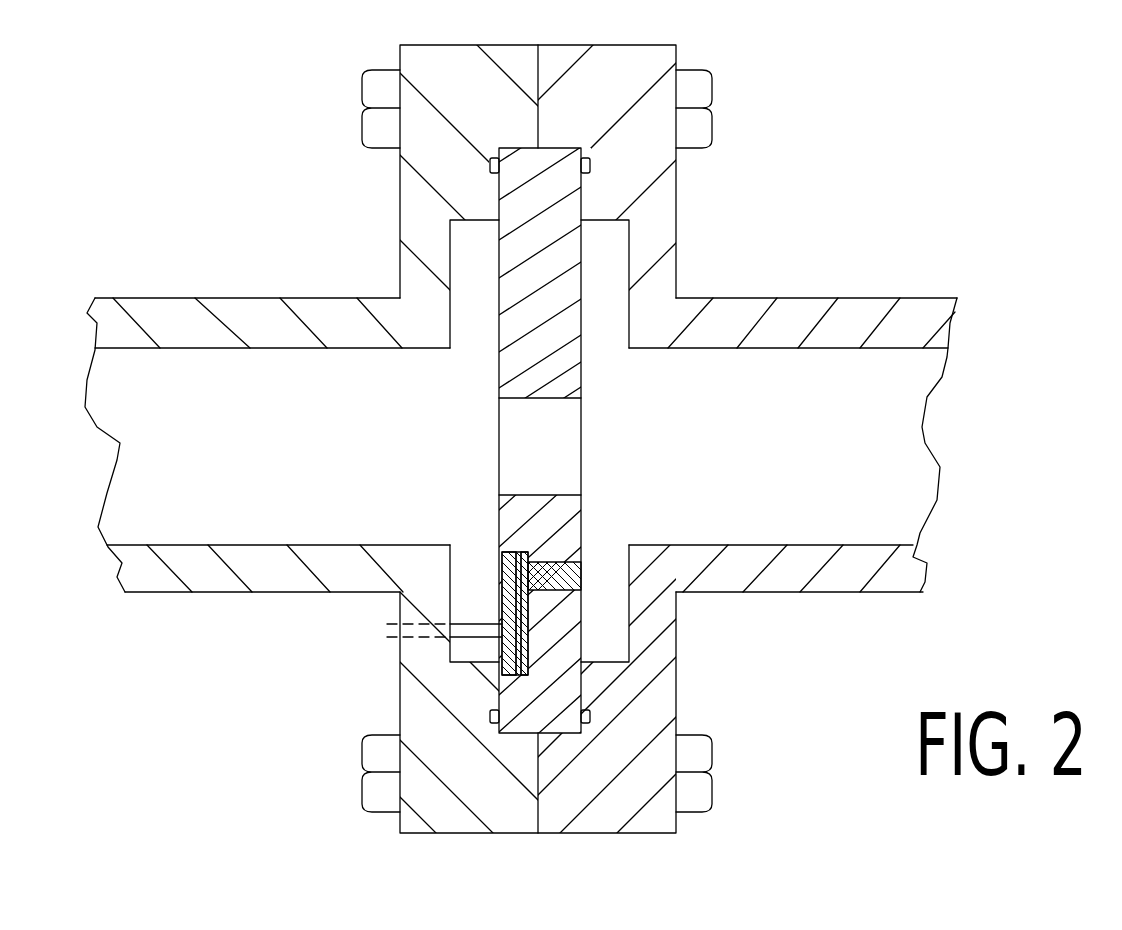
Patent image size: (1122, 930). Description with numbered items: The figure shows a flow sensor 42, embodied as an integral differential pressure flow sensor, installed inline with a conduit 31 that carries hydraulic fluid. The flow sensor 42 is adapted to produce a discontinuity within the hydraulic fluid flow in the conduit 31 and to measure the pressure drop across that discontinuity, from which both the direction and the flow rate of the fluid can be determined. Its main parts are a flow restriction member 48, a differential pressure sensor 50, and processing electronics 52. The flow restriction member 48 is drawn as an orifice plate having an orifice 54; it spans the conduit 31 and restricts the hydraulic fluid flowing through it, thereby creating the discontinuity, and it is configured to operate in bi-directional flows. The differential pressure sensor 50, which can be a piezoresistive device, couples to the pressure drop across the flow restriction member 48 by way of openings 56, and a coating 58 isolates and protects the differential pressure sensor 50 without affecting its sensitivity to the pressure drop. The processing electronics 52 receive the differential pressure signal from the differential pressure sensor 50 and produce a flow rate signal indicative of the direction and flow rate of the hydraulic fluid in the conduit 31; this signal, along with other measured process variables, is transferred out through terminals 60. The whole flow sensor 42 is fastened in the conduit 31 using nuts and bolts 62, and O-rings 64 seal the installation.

The conduit 31 is at (850, 308).
The flow sensor 42 is at (478, 262).
The flow restriction member 48 is at (576, 277).
The differential pressure sensor 50 is at (575, 578).
The processing electronics 52 is at (500, 668).
The orifice 54 is at (555, 420).
The openings 56 is at (505, 572).
The coating 58 is at (580, 573).
The terminals 60 is at (376, 628).
The nuts and bolts 62 is at (692, 70).
The O-rings 64 is at (591, 166).